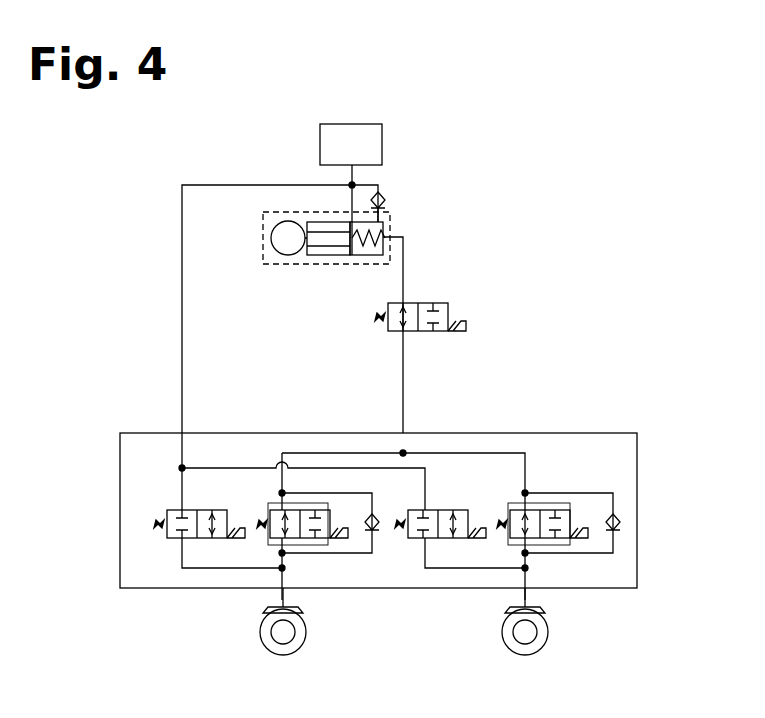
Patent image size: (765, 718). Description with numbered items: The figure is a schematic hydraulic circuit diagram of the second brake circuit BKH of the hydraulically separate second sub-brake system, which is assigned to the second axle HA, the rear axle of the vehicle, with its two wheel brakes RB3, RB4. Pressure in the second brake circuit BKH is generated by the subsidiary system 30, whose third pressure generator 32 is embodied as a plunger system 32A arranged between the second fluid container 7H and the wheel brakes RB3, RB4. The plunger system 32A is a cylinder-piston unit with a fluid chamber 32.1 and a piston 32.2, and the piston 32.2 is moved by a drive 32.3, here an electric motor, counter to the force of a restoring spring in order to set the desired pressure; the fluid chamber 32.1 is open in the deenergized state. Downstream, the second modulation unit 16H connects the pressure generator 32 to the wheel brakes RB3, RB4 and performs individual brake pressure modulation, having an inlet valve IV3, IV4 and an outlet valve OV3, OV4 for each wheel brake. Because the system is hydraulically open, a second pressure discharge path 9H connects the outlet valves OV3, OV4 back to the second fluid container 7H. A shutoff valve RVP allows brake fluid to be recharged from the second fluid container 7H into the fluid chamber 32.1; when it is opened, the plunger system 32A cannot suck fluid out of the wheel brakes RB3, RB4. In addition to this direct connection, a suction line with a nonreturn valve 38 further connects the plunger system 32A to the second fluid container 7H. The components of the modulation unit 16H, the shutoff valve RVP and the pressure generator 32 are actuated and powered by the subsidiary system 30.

The second fluid container 7H is at (320, 148).
The subsidiary system 30 is at (150, 243).
The nonreturn valve 38 is at (386, 197).
The third pressure generator 32 is at (407, 224).
The plunger system 32A is at (326, 238).
The fluid chamber 32.1 is at (385, 222).
The piston 32.2 is at (346, 222).
The drive 32.3 is at (271, 238).
The shutoff valve RVP is at (454, 320).
The second pressure discharge path 9H is at (182, 307).
The second modulation unit 16H is at (434, 516).
The outlet valve OV3 is at (190, 508).
The inlet valve IV3 is at (292, 511).
The outlet valve OV4 is at (431, 508).
The inlet valve IV4 is at (533, 511).
The wheel brake RB3 is at (286, 638).
The wheel brake RB4 is at (529, 638).
The second brake circuit BKH is at (622, 127).
The second axle HA is at (620, 640).